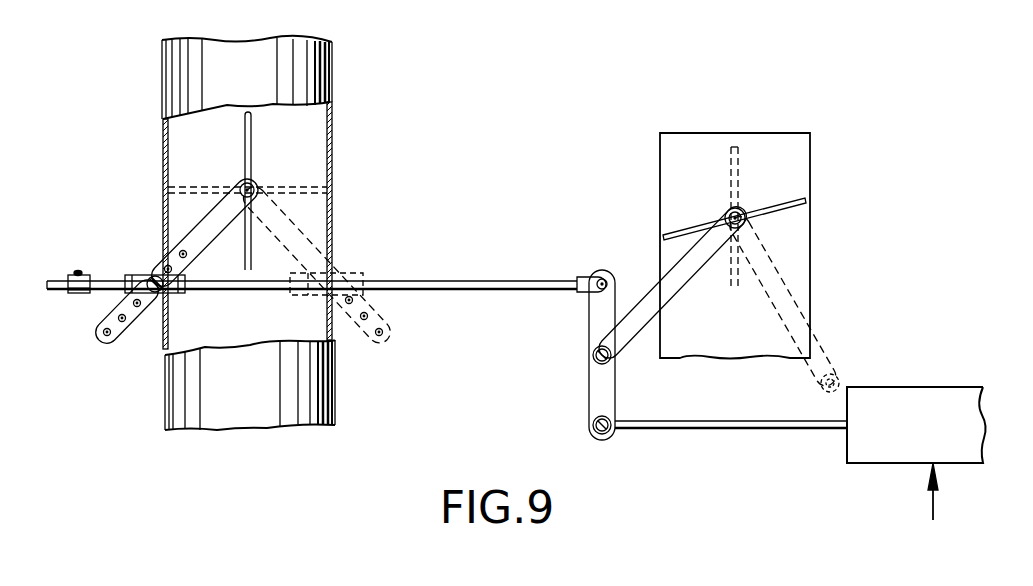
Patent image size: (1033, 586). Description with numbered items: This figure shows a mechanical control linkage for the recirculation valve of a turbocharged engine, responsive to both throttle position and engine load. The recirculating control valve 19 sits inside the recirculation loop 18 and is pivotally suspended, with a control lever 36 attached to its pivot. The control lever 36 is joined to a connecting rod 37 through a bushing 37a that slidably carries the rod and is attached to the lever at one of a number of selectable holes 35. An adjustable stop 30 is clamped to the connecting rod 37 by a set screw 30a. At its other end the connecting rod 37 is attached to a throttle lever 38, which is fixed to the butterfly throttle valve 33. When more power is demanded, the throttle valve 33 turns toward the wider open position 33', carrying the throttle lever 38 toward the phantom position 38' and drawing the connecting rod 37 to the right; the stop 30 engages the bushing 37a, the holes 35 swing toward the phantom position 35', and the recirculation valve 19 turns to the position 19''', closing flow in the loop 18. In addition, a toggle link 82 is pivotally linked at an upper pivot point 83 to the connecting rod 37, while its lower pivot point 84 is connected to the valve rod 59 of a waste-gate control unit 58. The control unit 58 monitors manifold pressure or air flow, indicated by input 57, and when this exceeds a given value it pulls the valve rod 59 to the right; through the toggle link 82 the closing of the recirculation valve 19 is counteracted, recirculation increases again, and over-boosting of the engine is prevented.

The recirculation loop 18 is at (260, 84).
The recirculating control valve 19 is at (267, 191).
The recirculation control valve closed position 19''' is at (247, 170).
The adjustable stop 30 is at (75, 295).
The set screw 30a is at (79, 270).
The throttle valve 33 is at (735, 246).
The throttle valve wider open position 33' is at (761, 215).
The selectable holes 35 is at (116, 322).
The control lever holes alternate position 35' is at (345, 270).
The control lever 36 is at (214, 230).
The connecting rod 37 is at (478, 280).
The bushing 37a is at (178, 295).
The throttle lever 38 is at (673, 282).
The throttle lever alternate position 38' is at (803, 302).
The manifold pressure or air flow input 57 is at (933, 503).
The waste-gate control unit 58 is at (897, 386).
The valve rod 59 is at (740, 430).
The toggle link 82 is at (593, 398).
The upper pivot point 83 is at (583, 274).
The lower pivot point 84 is at (597, 437).